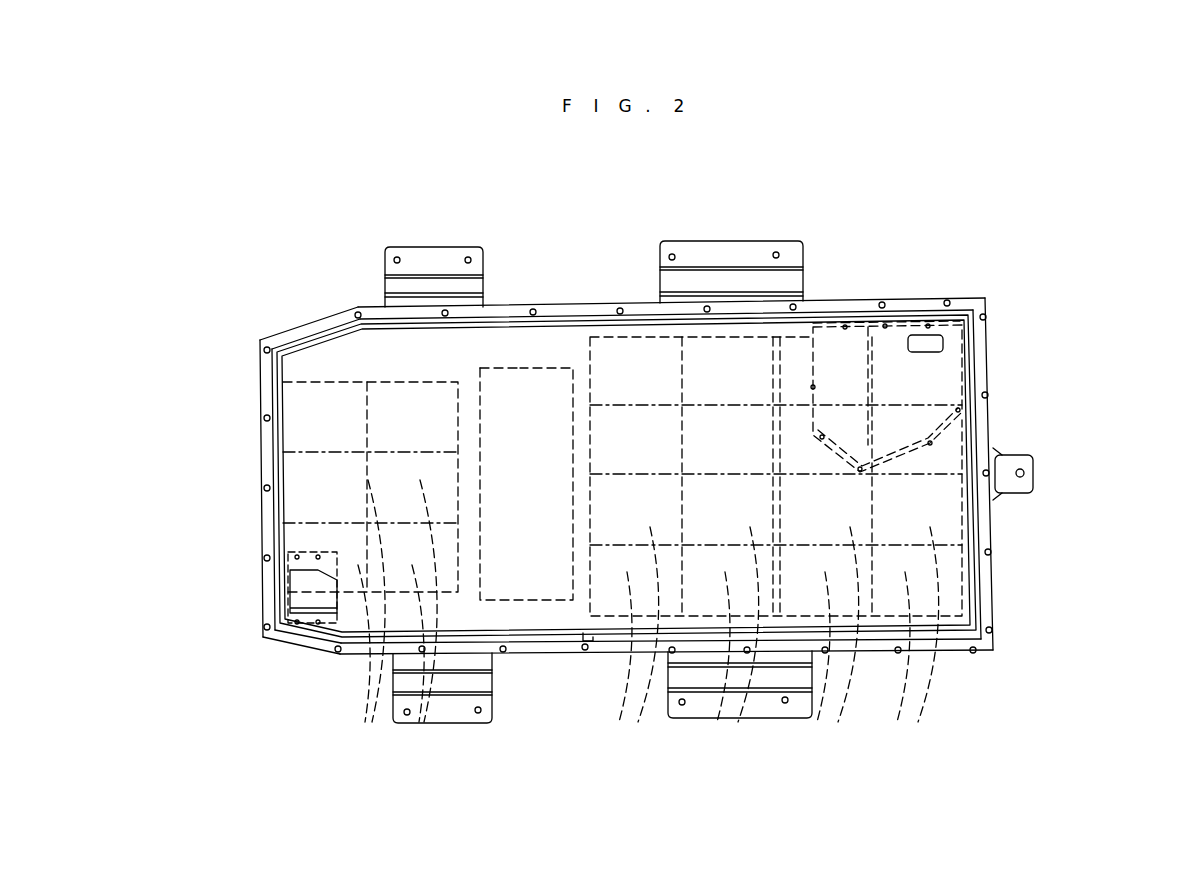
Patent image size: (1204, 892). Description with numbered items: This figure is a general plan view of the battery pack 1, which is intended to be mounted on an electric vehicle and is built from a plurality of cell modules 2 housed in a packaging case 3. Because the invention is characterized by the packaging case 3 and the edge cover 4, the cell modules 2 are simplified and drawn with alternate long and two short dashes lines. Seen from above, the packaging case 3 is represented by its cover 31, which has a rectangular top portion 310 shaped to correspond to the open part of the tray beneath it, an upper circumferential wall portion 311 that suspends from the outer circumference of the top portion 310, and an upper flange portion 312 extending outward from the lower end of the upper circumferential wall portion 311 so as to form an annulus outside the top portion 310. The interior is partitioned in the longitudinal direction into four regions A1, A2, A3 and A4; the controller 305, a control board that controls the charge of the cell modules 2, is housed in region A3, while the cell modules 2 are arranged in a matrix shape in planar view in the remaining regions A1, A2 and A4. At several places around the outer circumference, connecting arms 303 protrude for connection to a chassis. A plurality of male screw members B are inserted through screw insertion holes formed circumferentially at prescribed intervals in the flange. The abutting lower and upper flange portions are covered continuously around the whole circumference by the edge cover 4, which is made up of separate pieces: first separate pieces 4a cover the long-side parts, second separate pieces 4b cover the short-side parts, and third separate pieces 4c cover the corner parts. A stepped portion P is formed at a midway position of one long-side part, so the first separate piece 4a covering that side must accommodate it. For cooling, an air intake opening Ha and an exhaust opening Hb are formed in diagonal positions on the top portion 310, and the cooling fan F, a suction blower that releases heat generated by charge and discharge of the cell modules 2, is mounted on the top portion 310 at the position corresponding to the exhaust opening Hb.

The battery pack 1 is at (1125, 240).
The cell modules 2 is at (374, 726).
The packaging case 3 is at (696, 476).
The cover 31 is at (696, 476).
The edge cover 4 is at (619, 484).
The first separate pieces 4a is at (590, 302).
The second separate pieces 4b is at (983, 362).
The third separate pieces 4c is at (297, 328).
The connecting arms 303 is at (433, 258).
The controller 305 is at (548, 373).
The top portion 310 is at (697, 505).
The upper circumferential wall portion 311 is at (978, 577).
The upper flange portion 312 is at (983, 567).
The region A1 is at (886, 316).
The region A2 is at (776, 394).
The region A3 is at (516, 355).
The region A4 is at (358, 358).
The male screw member B is at (710, 307).
The cooling fan F is at (886, 283).
The air intake opening Ha is at (316, 605).
The exhaust opening Hb is at (923, 335).
The stepped portion P is at (586, 664).